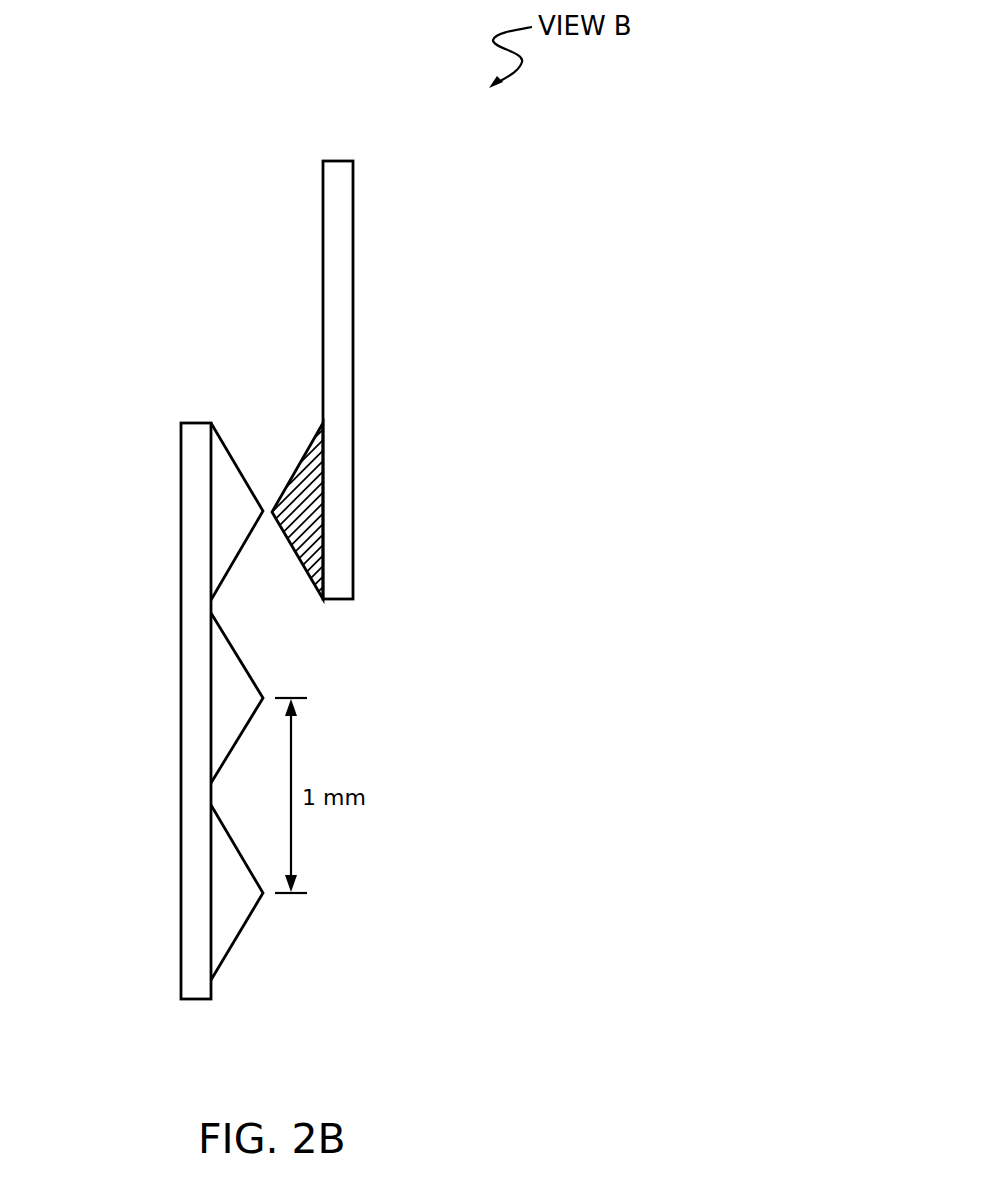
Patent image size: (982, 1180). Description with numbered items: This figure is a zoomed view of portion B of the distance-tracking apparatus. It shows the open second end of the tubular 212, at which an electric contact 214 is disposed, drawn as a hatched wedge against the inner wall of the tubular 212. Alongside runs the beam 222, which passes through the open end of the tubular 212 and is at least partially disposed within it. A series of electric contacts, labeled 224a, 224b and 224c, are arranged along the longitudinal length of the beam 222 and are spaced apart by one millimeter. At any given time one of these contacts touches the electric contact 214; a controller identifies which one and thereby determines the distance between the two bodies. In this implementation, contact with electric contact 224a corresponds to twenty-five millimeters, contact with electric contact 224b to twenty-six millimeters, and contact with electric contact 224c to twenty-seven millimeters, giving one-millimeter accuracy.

The tubular 212 is at (354, 347).
The electric contact 214 is at (305, 453).
The beam 222 is at (182, 982).
The electric contact 224a is at (238, 943).
The electric contact 224b is at (245, 663).
The electric contact 224c is at (228, 574).